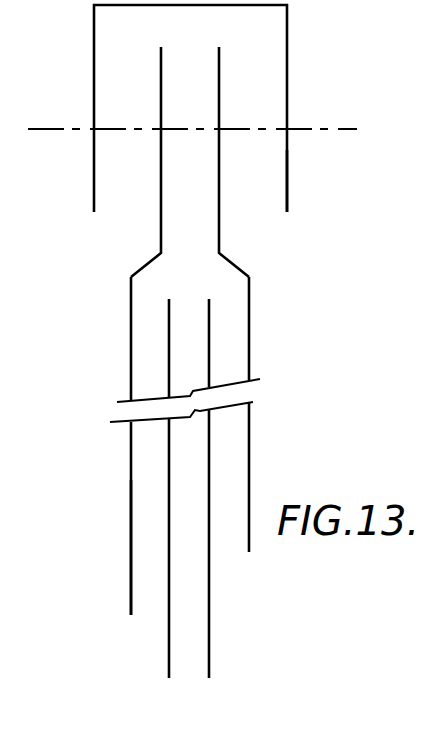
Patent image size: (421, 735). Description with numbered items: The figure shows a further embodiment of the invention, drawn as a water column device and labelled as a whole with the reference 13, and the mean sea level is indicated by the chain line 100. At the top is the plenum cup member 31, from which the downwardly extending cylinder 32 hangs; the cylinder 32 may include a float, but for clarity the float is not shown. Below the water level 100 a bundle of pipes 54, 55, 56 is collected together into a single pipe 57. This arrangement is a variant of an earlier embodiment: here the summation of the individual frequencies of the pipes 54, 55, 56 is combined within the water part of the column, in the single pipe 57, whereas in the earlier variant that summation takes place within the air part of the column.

The catheter shaft assembly 13 is at (192, 477).
The plenum cup member 31 is at (268, 32).
The downwardly extending cylinder 32 is at (287, 180).
The pipe 54 is at (230, 480).
The pipe 55 is at (193, 543).
The pipe 56 is at (148, 530).
The single pipe 57 is at (200, 232).
The mean sea level 100 is at (305, 128).